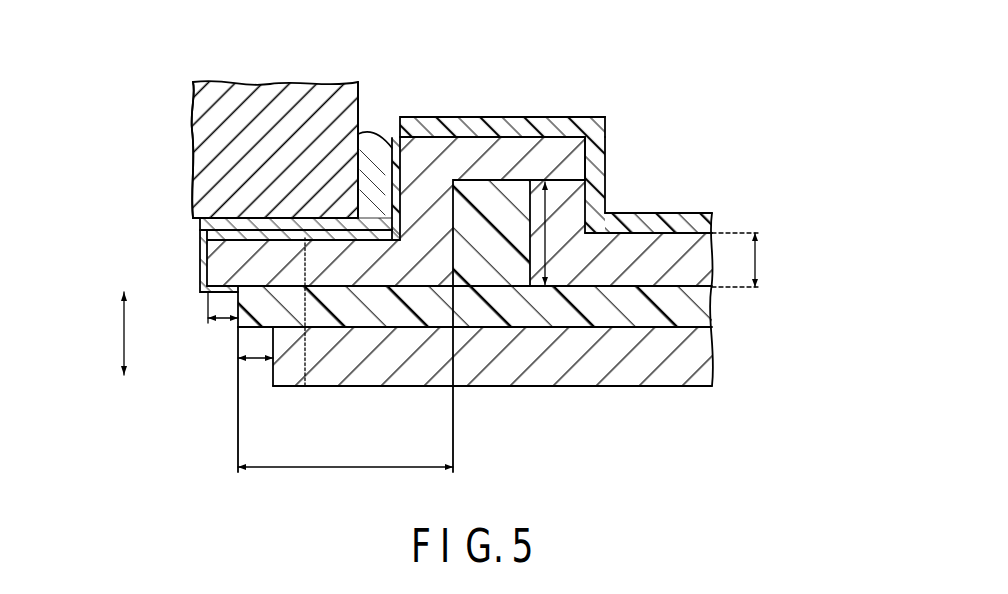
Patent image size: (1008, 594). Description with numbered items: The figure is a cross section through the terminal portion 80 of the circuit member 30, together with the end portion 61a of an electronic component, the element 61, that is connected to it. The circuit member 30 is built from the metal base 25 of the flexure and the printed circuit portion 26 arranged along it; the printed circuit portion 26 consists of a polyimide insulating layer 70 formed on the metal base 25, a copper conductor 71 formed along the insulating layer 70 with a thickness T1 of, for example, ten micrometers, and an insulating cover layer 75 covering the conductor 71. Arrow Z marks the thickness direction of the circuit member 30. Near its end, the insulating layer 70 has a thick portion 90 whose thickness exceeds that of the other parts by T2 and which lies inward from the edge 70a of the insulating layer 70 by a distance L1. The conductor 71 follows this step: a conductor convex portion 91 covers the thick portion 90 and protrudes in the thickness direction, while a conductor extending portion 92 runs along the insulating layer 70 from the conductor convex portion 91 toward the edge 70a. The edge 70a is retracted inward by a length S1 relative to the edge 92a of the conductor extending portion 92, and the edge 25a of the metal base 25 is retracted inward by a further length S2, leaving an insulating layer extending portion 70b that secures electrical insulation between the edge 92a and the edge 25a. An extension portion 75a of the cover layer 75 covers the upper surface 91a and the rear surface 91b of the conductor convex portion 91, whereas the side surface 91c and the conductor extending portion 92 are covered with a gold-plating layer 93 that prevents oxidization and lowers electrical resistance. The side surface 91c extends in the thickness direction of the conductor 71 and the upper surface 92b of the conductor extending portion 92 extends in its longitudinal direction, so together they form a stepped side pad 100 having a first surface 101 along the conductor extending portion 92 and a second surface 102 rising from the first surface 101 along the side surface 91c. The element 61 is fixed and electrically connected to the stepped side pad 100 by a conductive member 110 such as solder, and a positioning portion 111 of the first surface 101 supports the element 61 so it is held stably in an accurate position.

The metal base 25 is at (527, 342).
The edge of the metal base 25a is at (271, 388).
The printed circuit portion 26 is at (500, 319).
The circuit member 30 is at (709, 199).
The element 61 is at (207, 123).
The end portion of the element 61a is at (376, 206).
The insulating layer 70 is at (463, 326).
The edge of the insulating layer 70a is at (240, 307).
The insulating layer extending portion 70b is at (240, 347).
The conductor 71 is at (650, 258).
The cover layer 75 is at (700, 224).
The extension portion of the cover layer 75a is at (581, 120).
The terminal portion 80 is at (537, 241).
The thick portion 90 is at (505, 195).
The conductor convex portion 91 is at (537, 133).
The upper surface of the conductor convex portion 91a is at (470, 116).
The rear surface of the conductor convex portion 91b is at (606, 140).
The side surface of the conductor convex portion 91c is at (401, 134).
The conductor extending portion 92 is at (388, 262).
The edge of the conductor extending portion 92a is at (199, 262).
The upper surface of the conductor extending portion 92b is at (260, 232).
The gold-plating layer 93 is at (199, 247).
The stepped side pad 100 is at (340, 92).
The first surface 101 is at (285, 215).
The second surface 102 is at (333, 205).
The conductive member 110 is at (376, 142).
The positioning portion 111 is at (305, 386).
The length S1 is at (233, 320).
The length S2 is at (254, 362).
The distance L1 is at (340, 470).
The thickness T1 is at (757, 258).
The thickness T2 is at (548, 244).
The arrow Z is at (122, 335).